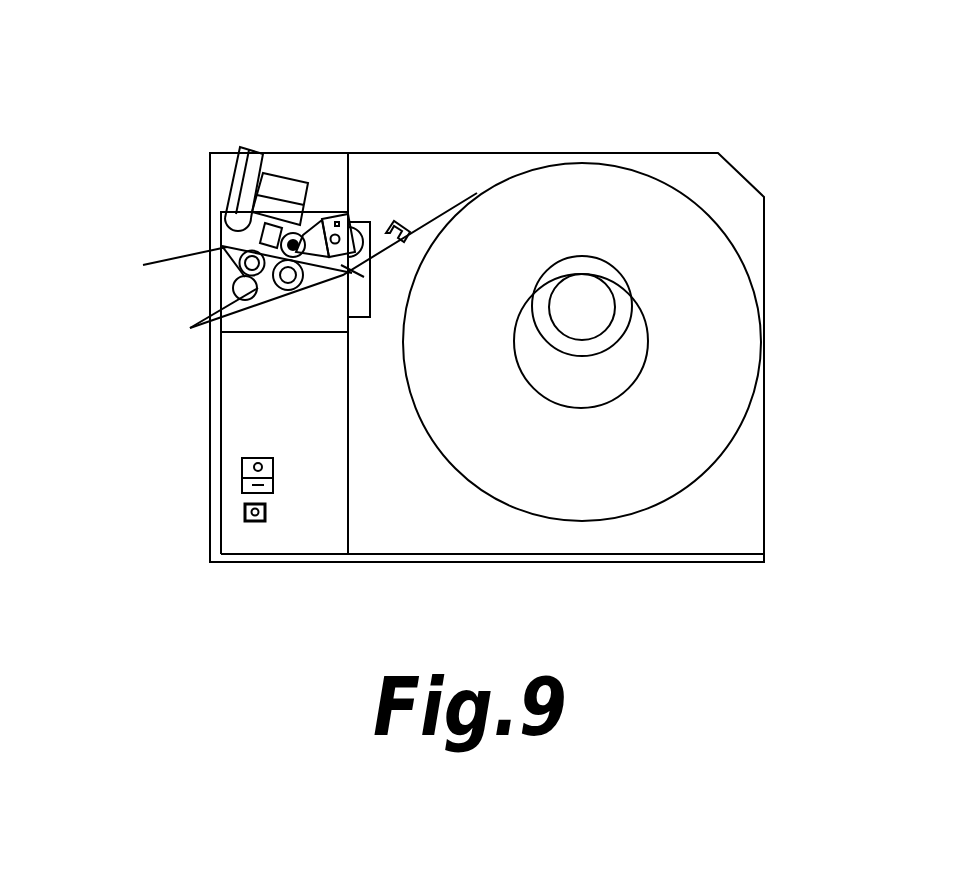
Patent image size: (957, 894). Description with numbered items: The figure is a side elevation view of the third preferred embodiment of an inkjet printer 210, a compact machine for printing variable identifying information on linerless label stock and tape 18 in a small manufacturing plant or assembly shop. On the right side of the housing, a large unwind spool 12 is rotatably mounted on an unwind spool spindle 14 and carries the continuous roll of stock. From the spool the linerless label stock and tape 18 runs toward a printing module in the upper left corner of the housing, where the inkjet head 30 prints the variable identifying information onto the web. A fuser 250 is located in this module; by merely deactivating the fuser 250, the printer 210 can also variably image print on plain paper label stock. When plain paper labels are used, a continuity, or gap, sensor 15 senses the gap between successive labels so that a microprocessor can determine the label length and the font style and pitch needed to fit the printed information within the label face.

The inkjet printer 210 is at (680, 113).
The unwind spool 12 is at (719, 367).
The unwind spool spindle 14 is at (572, 342).
The linerless label stock and tape 18 is at (163, 258).
The continuity sensor 15 is at (390, 222).
The inkjet head 30 is at (290, 177).
The fuser 250 is at (233, 180).